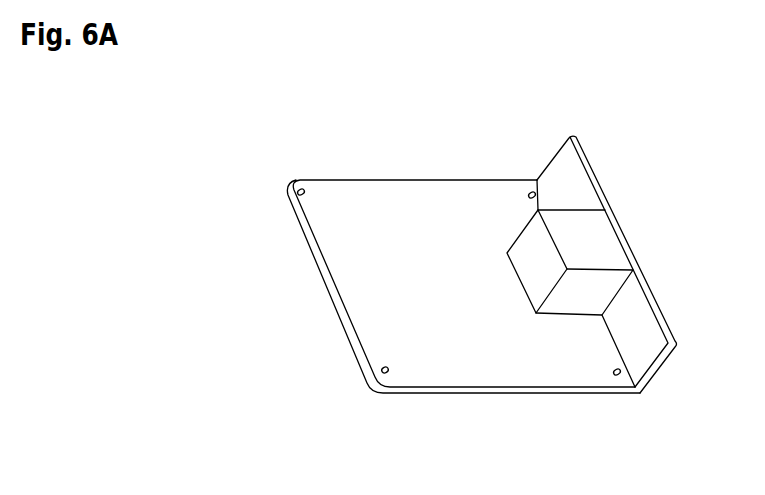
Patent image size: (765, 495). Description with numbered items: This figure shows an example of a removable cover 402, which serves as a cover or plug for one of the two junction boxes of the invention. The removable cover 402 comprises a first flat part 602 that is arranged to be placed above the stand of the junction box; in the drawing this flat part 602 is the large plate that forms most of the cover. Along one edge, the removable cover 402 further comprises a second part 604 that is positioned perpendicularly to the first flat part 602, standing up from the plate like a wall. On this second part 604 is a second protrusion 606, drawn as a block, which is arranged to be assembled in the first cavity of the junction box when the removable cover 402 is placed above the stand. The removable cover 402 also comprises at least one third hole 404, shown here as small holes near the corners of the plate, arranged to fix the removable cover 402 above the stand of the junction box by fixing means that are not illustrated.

The removable cover 402 is at (388, 317).
The third hole 404 is at (297, 187).
The first flat part 602 is at (410, 207).
The second part 604 is at (568, 182).
The second protrusion 606 is at (597, 238).